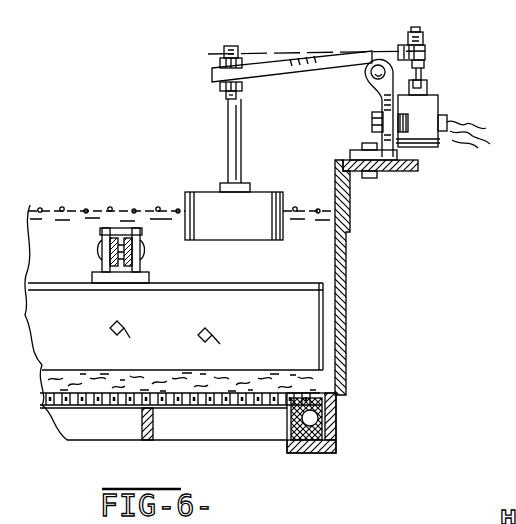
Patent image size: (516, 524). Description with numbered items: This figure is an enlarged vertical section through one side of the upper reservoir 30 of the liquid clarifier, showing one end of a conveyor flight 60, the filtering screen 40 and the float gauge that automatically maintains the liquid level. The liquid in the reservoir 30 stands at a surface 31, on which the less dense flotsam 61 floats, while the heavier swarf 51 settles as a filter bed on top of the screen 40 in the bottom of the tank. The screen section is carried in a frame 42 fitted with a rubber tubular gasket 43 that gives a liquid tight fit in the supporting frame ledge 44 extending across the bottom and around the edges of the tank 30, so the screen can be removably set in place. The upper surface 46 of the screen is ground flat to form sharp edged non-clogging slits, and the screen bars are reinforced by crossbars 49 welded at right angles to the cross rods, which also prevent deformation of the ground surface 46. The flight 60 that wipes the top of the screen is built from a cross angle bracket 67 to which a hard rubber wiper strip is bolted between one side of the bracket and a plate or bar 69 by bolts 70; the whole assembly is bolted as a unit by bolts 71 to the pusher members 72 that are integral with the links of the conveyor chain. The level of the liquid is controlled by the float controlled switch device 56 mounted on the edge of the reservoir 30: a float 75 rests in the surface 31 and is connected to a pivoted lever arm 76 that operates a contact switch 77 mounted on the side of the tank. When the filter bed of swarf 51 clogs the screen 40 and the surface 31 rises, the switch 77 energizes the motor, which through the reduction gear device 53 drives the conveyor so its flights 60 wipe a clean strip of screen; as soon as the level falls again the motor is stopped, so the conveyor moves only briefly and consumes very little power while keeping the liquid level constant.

The upper reservoir 30 is at (354, 307).
The liquid surface 31 is at (60, 184).
The filtering screen 40 is at (257, 445).
The screen frame 42 is at (308, 391).
The rubber tubular gasket 43 is at (334, 427).
The supporting frame ledge 44 is at (321, 448).
The upper ground surface 46 is at (116, 391).
The crossbar 49 is at (160, 434).
The swarf 51 is at (261, 386).
The reduction gear device 53 is at (128, 259).
The float controlled switch device 56 is at (442, 82).
The conveyor flight 60 is at (332, 339).
The flotsam 61 is at (128, 210).
The cross angle bracket 67 is at (293, 267).
The plate or bar 69 is at (280, 326).
The bolts 70 is at (227, 346).
The bolts 71 is at (137, 341).
The pusher member 72 is at (165, 278).
The float 75 is at (258, 193).
The pivoted lever arm 76 is at (316, 70).
The contact switch 77 is at (441, 103).